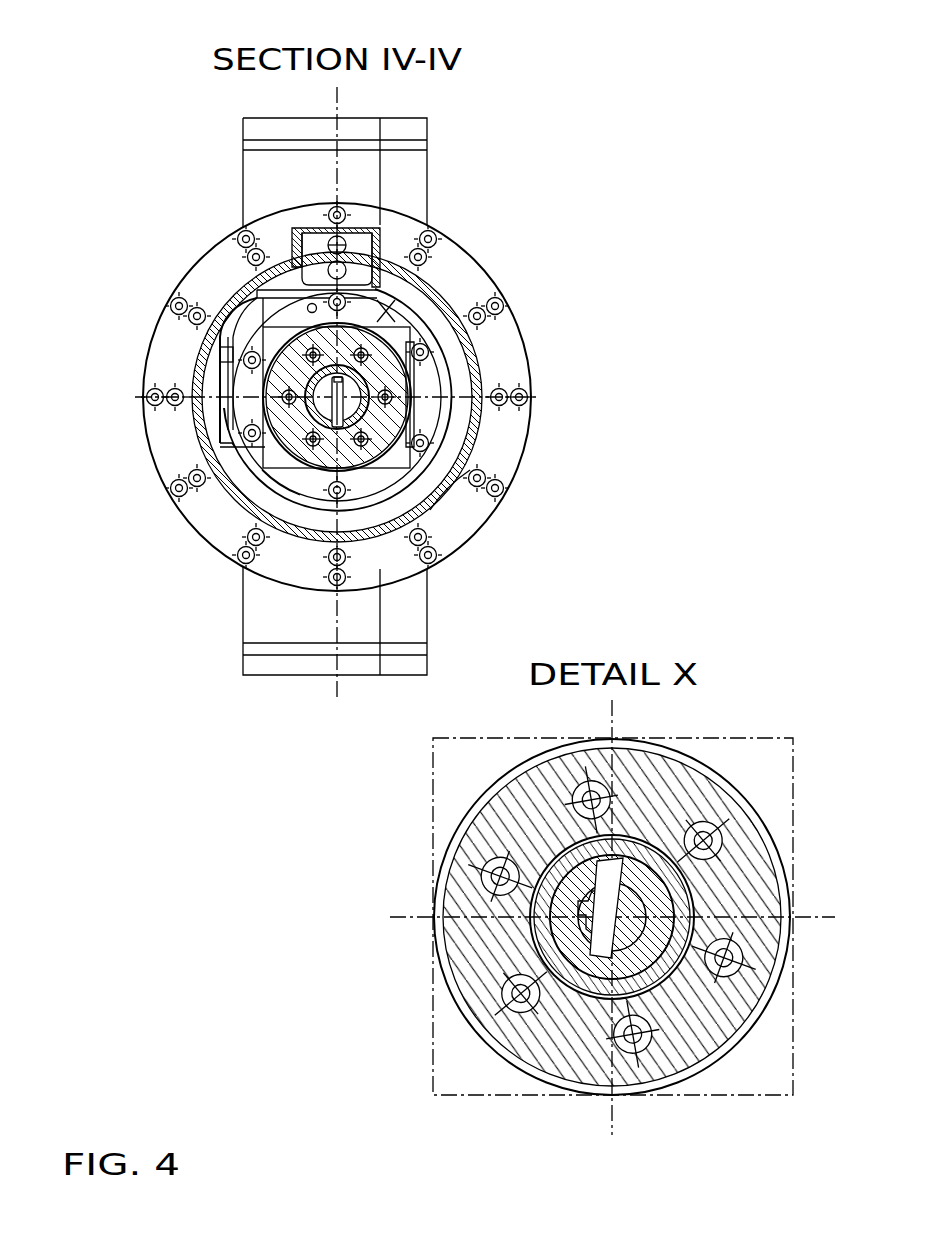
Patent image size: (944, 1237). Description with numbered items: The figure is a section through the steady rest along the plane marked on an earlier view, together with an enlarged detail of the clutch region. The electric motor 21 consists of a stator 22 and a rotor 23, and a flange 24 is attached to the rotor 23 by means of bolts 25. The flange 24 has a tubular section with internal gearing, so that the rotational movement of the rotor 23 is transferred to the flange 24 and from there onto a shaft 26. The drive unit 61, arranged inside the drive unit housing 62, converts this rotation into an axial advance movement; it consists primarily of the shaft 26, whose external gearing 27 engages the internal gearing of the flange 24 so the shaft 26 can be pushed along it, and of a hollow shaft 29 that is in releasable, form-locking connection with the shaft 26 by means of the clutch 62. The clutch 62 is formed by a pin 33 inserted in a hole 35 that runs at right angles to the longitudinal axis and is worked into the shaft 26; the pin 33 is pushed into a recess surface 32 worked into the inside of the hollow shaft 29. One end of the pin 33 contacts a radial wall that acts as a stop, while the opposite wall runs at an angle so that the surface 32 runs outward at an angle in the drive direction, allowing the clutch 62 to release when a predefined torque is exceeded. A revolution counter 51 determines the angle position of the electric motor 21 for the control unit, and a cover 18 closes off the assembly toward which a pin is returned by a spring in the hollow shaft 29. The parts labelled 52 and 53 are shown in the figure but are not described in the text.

The cover 18 is at (477, 437).
The electric motor 21 is at (208, 250).
The stator 22 is at (448, 490).
The rotor 23 is at (339, 428).
The flange 24 is at (477, 360).
The bolts 25 is at (427, 440).
The shaft 26 is at (368, 380).
The external gearing 27 is at (417, 490).
The hollow shaft 29 is at (232, 441).
The recess surface 32 is at (305, 500).
The pin 33 is at (230, 382).
The hole 35 is at (255, 352).
The revolution counter 51 is at (240, 418).
The fastening screws 52 is at (346, 270).
The clamp 53 is at (250, 315).
The drive unit 61 is at (624, 138).
The clutch 62 is at (760, 716).